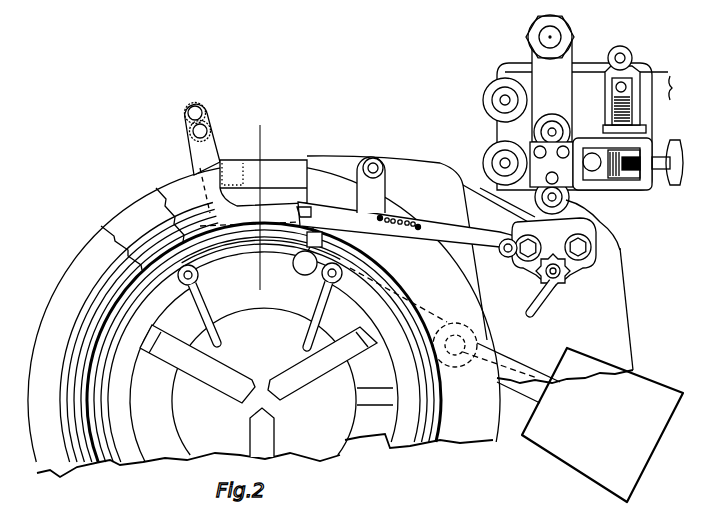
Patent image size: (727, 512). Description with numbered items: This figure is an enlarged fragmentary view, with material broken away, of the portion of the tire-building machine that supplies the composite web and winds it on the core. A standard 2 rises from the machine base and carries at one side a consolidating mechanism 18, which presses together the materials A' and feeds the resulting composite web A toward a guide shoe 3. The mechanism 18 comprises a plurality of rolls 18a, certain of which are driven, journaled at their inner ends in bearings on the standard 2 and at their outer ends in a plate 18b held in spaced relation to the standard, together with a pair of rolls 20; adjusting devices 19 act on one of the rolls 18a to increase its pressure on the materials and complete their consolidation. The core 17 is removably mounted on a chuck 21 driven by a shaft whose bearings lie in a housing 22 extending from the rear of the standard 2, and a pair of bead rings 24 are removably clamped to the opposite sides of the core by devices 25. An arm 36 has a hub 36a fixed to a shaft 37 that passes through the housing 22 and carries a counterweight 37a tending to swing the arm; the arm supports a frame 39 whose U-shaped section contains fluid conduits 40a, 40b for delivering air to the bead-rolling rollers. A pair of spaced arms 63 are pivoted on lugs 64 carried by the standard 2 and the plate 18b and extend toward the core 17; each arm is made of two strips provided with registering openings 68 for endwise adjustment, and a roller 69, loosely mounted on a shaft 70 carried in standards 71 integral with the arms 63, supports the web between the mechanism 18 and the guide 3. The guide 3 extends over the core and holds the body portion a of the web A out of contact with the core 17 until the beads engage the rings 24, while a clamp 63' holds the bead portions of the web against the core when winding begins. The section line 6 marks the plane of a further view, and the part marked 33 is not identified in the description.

The standard 2 is at (621, 298).
The guide shoe 3 is at (285, 161).
The section line 6 is at (268, 213).
The core 17 is at (70, 283).
The consolidating mechanism 18 is at (577, 102).
The rolls 18a is at (492, 147).
The plate 18b is at (612, 238).
The adjusting devices 19 is at (680, 163).
The pair of rolls 20 is at (634, 55).
The chuck 21 is at (282, 381).
The housing 22 is at (374, 420).
The bead rings 24 is at (95, 424).
The clamping devices 25 is at (300, 328).
The knob 33 is at (572, 274).
The arm 36 is at (311, 283).
The hub 36a is at (476, 338).
The shaft 37 is at (457, 357).
The counterweight 37a is at (648, 437).
The frame 39 is at (208, 151).
The fluid conduit 40a is at (205, 110).
The fluid conduit 40b is at (206, 129).
The arms 63 is at (406, 262).
The clamps 63' is at (348, 244).
The lugs 64 is at (510, 257).
The openings 68 is at (418, 232).
The roller 69 is at (388, 166).
The shaft 70 is at (373, 158).
The standards 71 is at (378, 186).
The body portion a is at (420, 165).
The composite web A is at (554, 251).
The materials A' is at (679, 89).